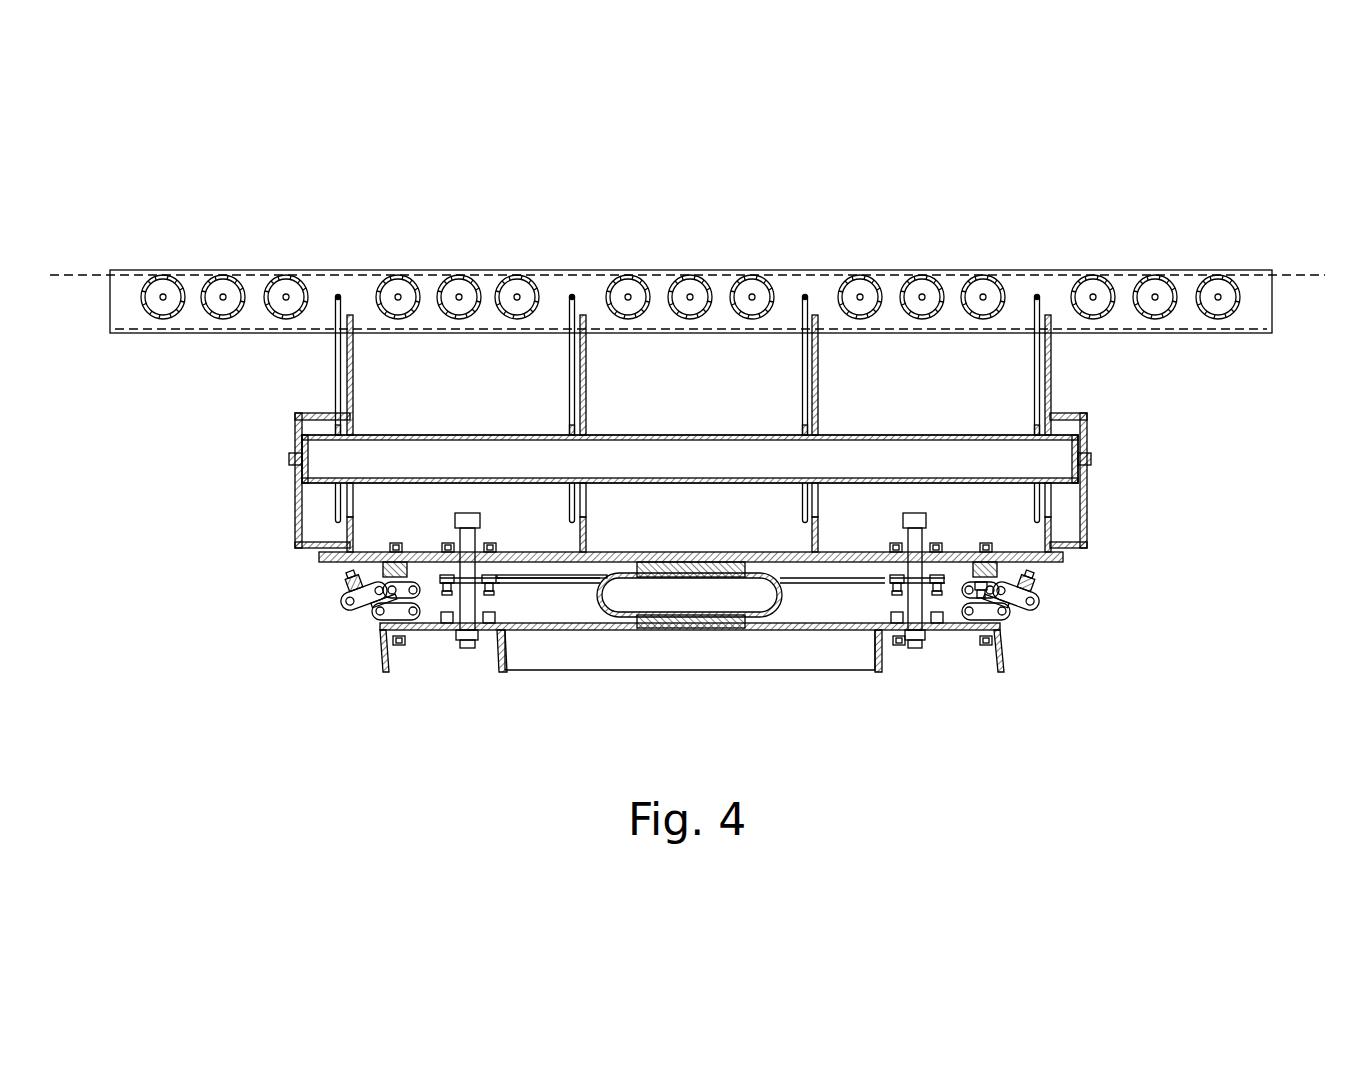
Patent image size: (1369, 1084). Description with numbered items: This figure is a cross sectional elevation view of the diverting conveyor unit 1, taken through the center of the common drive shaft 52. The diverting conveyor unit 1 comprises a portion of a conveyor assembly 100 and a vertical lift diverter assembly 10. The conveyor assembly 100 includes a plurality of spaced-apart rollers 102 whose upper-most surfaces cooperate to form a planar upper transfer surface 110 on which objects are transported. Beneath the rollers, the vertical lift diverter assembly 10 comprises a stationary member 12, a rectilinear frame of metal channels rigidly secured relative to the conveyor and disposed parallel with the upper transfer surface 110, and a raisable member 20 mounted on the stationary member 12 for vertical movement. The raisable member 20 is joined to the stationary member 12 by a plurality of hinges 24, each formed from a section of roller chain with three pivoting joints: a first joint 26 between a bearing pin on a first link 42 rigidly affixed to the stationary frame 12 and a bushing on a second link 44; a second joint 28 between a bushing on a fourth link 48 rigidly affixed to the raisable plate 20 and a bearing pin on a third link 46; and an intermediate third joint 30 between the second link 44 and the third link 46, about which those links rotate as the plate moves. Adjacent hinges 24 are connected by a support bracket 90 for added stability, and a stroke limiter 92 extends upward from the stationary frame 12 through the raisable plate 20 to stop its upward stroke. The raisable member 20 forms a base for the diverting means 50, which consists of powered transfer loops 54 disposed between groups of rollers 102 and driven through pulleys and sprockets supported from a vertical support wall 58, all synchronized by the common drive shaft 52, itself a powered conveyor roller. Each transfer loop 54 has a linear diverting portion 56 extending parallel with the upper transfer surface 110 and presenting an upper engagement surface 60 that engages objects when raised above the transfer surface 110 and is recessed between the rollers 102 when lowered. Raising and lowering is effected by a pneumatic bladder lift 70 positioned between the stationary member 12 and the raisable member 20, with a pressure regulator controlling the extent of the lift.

The diverting conveyor unit 1 is at (1250, 489).
The vertical lift diverter assembly 10 is at (235, 548).
The stationary member 12 is at (426, 632).
The raisable member 20 is at (731, 552).
The hinge 24 is at (352, 669).
The first joint 26 is at (378, 622).
The second joint 28 is at (360, 625).
The third joint 30 is at (348, 606).
The first link 42 is at (1002, 616).
The second link 44 is at (1005, 612).
The third link 46 is at (1018, 605).
The fourth link 48 is at (975, 600).
The diverting means 50 is at (1142, 386).
The common drive shaft 52 is at (628, 455).
The transfer loop 54 is at (1034, 405).
The linear diverting portion 56 is at (808, 302).
The vertical support wall 58 is at (584, 393).
The upper engagement surface 60 is at (573, 316).
The pneumatic bladder lift 70 is at (752, 595).
The support bracket 90 is at (1032, 576).
The stroke limiter 92 is at (915, 532).
The conveyor assembly 100 is at (1244, 195).
The rollers 102 is at (1007, 285).
The upper transfer surface 110 is at (80, 275).